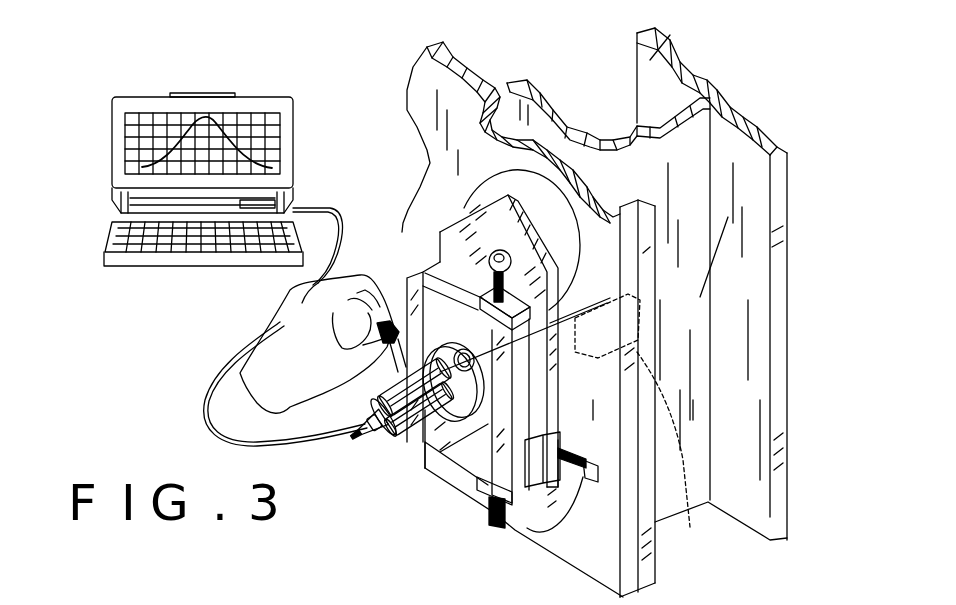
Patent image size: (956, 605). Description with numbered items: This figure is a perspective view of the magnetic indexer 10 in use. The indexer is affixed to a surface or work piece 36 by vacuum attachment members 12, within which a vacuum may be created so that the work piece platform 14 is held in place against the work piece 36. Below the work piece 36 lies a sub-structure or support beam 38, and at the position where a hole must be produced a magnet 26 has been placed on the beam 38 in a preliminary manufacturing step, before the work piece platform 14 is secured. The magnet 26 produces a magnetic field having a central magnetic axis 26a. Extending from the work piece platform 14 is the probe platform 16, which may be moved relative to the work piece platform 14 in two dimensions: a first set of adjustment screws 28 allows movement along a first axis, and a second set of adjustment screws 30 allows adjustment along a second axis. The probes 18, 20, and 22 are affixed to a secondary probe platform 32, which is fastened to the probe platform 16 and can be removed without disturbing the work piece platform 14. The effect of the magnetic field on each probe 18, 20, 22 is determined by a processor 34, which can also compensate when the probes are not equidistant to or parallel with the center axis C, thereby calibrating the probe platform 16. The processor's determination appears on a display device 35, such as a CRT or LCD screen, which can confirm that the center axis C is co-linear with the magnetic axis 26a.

The magnetic indexer 10 is at (407, 225).
The vacuum attachment member 12 is at (553, 223).
The work piece platform 14 is at (472, 228).
The probe platform 16 is at (428, 470).
The probe 18 is at (403, 437).
The probe 20 is at (362, 427).
The probe 22 is at (363, 393).
The magnet 26 is at (576, 398).
The central magnetic axis 26a is at (740, 167).
The first set of adjustment screws 28 is at (597, 480).
The second set of adjustment screws 30 is at (497, 527).
The secondary probe platform 32 is at (437, 287).
The processor 34 is at (110, 222).
The display device 35 is at (246, 110).
The work piece 36 is at (437, 46).
The support beam 38 is at (523, 82).
The center axis C is at (643, 93).